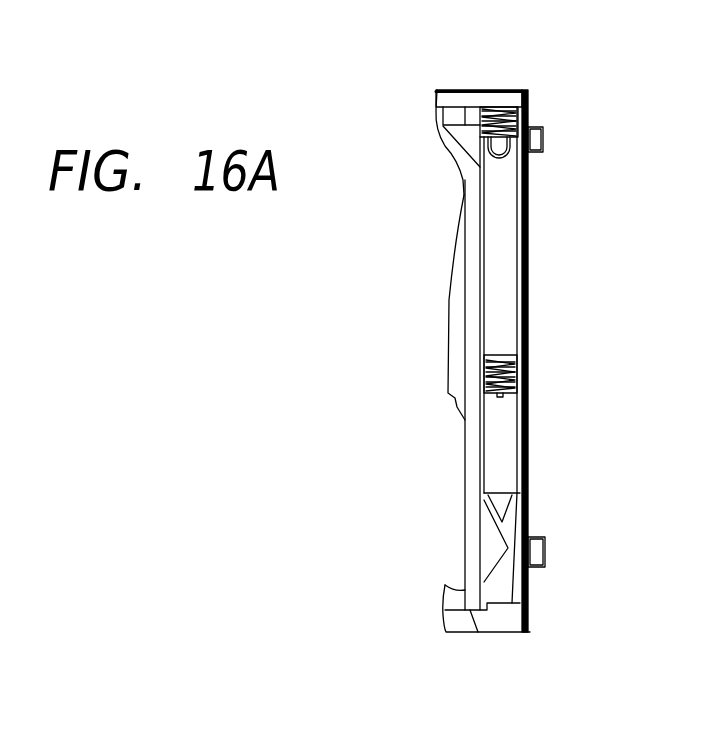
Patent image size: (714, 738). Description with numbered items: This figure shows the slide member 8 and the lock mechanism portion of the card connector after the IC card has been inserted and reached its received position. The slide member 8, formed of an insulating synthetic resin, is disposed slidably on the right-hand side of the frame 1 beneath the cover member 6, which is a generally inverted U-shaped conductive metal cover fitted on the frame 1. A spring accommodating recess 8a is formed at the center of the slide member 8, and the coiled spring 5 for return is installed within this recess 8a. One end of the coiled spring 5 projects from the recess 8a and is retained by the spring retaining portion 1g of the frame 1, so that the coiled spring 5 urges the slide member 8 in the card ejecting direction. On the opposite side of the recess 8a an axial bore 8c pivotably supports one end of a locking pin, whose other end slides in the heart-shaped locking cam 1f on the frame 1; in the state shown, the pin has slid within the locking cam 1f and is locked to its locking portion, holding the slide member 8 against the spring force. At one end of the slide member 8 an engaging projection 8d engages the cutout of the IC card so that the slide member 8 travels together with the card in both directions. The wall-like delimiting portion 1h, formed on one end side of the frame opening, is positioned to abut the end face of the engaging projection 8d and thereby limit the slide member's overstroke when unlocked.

The frame 1 is at (500, 632).
The locking cam 1f is at (510, 522).
The spring retaining portion 1g is at (497, 147).
The wall-like delimiting portion 1h is at (458, 97).
The coiled spring 5 is at (518, 112).
The cover member 6 is at (530, 340).
The slide member 8 is at (508, 463).
The spring accommodating recess 8a is at (500, 258).
The axial bore 8c is at (500, 398).
The engaging projection 8d is at (460, 132).